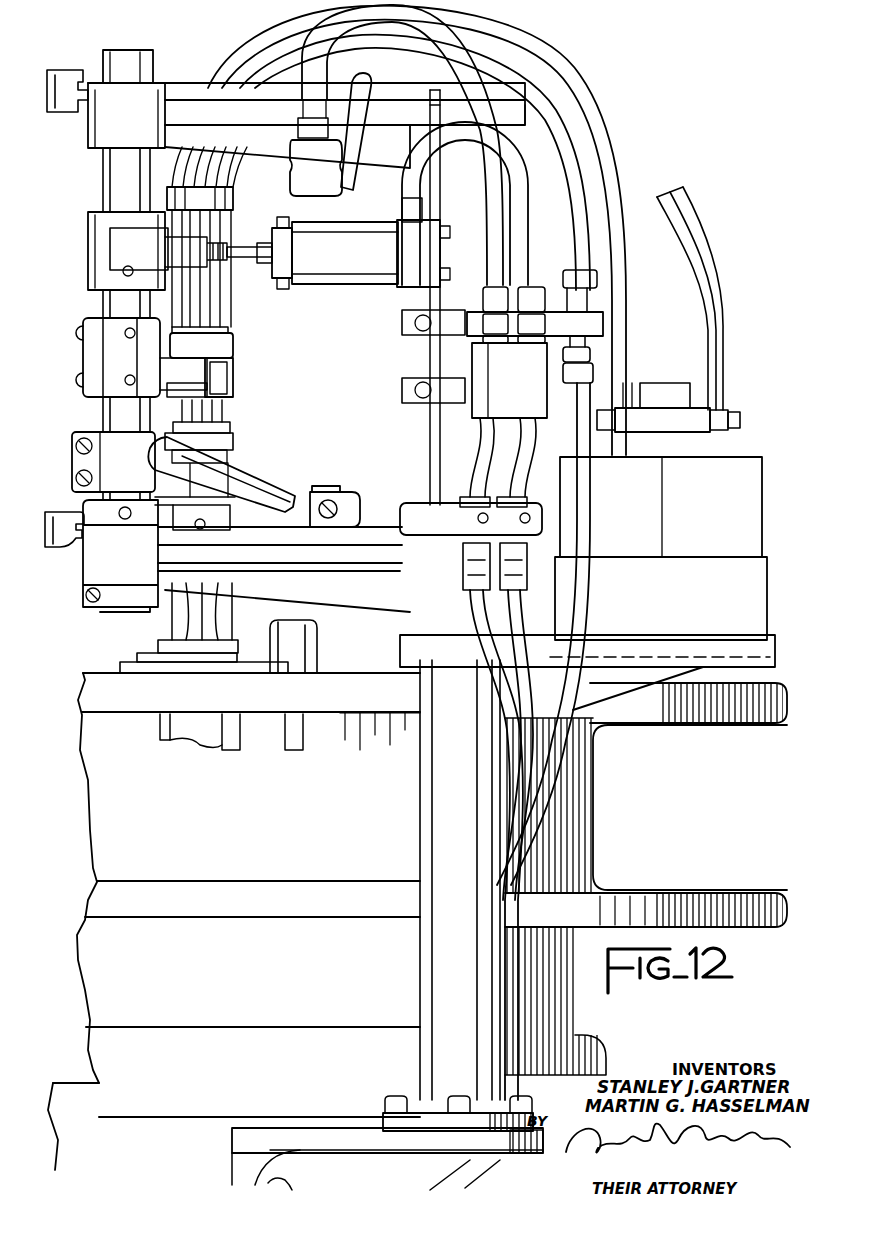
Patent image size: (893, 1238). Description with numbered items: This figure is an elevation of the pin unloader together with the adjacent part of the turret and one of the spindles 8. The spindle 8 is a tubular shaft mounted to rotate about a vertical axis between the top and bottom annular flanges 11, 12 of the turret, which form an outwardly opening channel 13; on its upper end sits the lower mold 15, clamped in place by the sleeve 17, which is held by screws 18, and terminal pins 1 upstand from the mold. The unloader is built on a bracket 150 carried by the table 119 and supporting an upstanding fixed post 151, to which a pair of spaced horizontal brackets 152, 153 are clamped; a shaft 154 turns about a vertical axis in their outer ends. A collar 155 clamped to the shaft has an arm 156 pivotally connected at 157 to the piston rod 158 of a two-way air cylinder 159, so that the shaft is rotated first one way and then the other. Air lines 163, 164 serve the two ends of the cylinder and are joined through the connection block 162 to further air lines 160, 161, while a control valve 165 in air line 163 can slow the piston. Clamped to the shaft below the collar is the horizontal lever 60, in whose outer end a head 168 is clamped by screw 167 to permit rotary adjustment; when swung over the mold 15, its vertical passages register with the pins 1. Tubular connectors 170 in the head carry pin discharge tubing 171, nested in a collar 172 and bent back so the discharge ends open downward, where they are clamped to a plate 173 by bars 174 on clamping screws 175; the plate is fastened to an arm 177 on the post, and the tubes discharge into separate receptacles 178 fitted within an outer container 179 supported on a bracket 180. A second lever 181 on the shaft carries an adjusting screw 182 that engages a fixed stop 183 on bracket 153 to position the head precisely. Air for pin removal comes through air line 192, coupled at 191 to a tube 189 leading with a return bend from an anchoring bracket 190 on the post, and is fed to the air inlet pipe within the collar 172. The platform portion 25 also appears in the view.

The terminal pins 1 is at (225, 405).
The spindle 8 is at (232, 605).
The top annular flange 11 is at (768, 725).
The bottom annular flange 12 is at (730, 895).
The outwardly opening channel 13 is at (618, 828).
The lower mold 15 is at (232, 425).
The sleeve 17 is at (236, 441).
The screws 18 is at (232, 525).
The platform 25 is at (160, 737).
The lever 60 is at (83, 360).
The table 119 is at (75, 1090).
The bracket 150 is at (390, 1155).
The fixed post 151 is at (428, 1010).
The bracket 152 is at (183, 92).
The bracket 153 is at (370, 532).
The shaft 154 is at (108, 160).
The collar 155 is at (92, 215).
The arm 156 is at (118, 252).
The pivotal connection 157 is at (122, 272).
The piston rod 158 is at (262, 257).
The two-way air cylinder 159 is at (362, 284).
The air line 160 is at (473, 660).
The air line 161 is at (520, 698).
The connection block 162 is at (470, 410).
The air line 163 is at (428, 38).
The air line 164 is at (470, 140).
The control valve 165 is at (328, 190).
The screw 167 is at (233, 386).
The head 168 is at (233, 350).
The tubular connectors 170 is at (228, 335).
The pin discharge tubing 171 is at (230, 228).
The collar 172 is at (237, 205).
The plate 173 is at (688, 432).
The bars 174 is at (605, 432).
The clamping screws 175 is at (738, 415).
The arm 177 is at (632, 382).
The receptacles 178 is at (762, 472).
The outer container 179 is at (760, 572).
The bracket 180 is at (605, 640).
The second lever 181 is at (272, 477).
The adjusting screw 182 is at (308, 495).
The fixed stop 183 is at (345, 490).
The tube 189 is at (572, 188).
The anchoring bracket 190 is at (607, 325).
The coupling 191 is at (595, 352).
The air line 192 is at (590, 518).